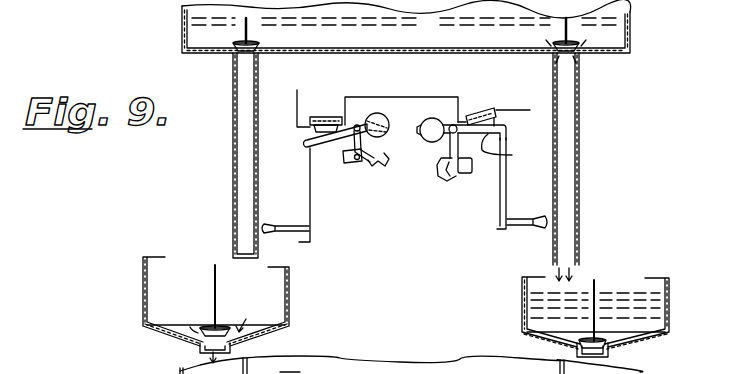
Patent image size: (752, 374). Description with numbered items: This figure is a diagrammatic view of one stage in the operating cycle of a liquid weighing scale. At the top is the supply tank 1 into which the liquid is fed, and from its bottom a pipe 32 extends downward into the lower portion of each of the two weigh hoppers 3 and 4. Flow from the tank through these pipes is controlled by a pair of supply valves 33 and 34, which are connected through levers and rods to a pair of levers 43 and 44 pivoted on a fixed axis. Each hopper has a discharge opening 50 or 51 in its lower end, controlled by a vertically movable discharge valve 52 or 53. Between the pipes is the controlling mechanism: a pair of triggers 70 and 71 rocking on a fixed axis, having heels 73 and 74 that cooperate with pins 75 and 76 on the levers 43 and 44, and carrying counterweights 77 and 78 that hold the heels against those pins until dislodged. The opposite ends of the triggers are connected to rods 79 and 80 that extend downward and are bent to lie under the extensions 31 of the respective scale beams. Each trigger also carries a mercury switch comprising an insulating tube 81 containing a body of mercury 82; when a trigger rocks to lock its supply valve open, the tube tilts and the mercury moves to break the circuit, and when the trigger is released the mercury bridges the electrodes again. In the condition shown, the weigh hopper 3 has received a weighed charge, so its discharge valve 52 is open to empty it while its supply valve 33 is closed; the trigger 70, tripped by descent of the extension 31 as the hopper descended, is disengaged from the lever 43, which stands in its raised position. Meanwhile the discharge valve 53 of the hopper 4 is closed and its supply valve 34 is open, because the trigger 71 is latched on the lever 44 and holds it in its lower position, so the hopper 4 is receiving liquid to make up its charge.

The supply tank 1 is at (180, 32).
The weigh hopper 3 is at (280, 292).
The weigh hopper 4 is at (670, 283).
The extension of scale beam 31 is at (292, 226).
The pipe 32 is at (237, 159).
The supply valve 33 is at (259, 46).
The supply valve 34 is at (552, 45).
The lever 43 is at (375, 169).
The lever 44 is at (440, 173).
The discharge opening 50 is at (198, 355).
The discharge opening 51 is at (606, 357).
The discharge valve 52 is at (212, 328).
The discharge valve 53 is at (603, 338).
The trigger 70 is at (322, 148).
The trigger 71 is at (491, 146).
The heel 73 is at (360, 166).
The heel 74 is at (448, 155).
The pin 75 is at (349, 168).
The pin 76 is at (458, 176).
The counterweight 77 is at (378, 117).
The counterweight 78 is at (437, 119).
The rod 79 is at (309, 176).
The rod 80 is at (502, 205).
The tube 81 is at (304, 126).
The body of mercury 82 is at (333, 117).